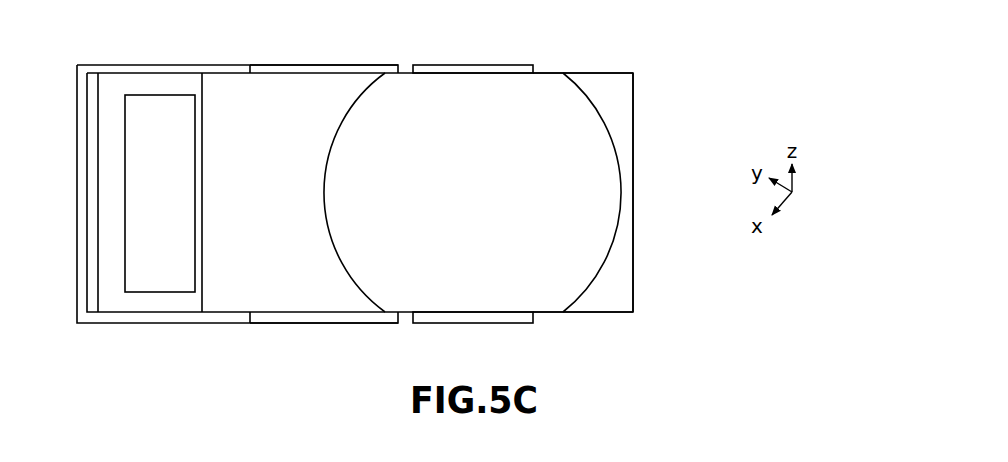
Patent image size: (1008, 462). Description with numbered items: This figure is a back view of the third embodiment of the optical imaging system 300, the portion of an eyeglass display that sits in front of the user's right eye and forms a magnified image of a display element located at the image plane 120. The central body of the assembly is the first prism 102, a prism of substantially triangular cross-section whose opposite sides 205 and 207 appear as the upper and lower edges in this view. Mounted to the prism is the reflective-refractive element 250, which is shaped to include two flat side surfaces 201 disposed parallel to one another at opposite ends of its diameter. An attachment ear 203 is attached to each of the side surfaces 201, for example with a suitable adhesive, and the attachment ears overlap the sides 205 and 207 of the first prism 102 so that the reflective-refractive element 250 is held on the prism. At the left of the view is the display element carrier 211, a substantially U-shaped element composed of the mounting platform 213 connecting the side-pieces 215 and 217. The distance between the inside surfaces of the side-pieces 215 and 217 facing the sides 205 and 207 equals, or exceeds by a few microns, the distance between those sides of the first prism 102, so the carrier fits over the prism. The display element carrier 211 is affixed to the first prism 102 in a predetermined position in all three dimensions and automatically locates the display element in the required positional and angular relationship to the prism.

The first prism 102 is at (618, 97).
The image plane 120 is at (136, 82).
The side surfaces 201 is at (545, 72).
The attachment ear 203 is at (457, 63).
The side of the first prism 205 is at (600, 72).
The side of the first prism 207 is at (613, 313).
The display element carrier 211 is at (265, 61).
The mounting platform 213 is at (82, 88).
The side-piece 215 is at (338, 63).
The side-piece 217 is at (290, 324).
The reflective-refractive element 250 is at (618, 147).
The optical imaging system 300 is at (637, 224).